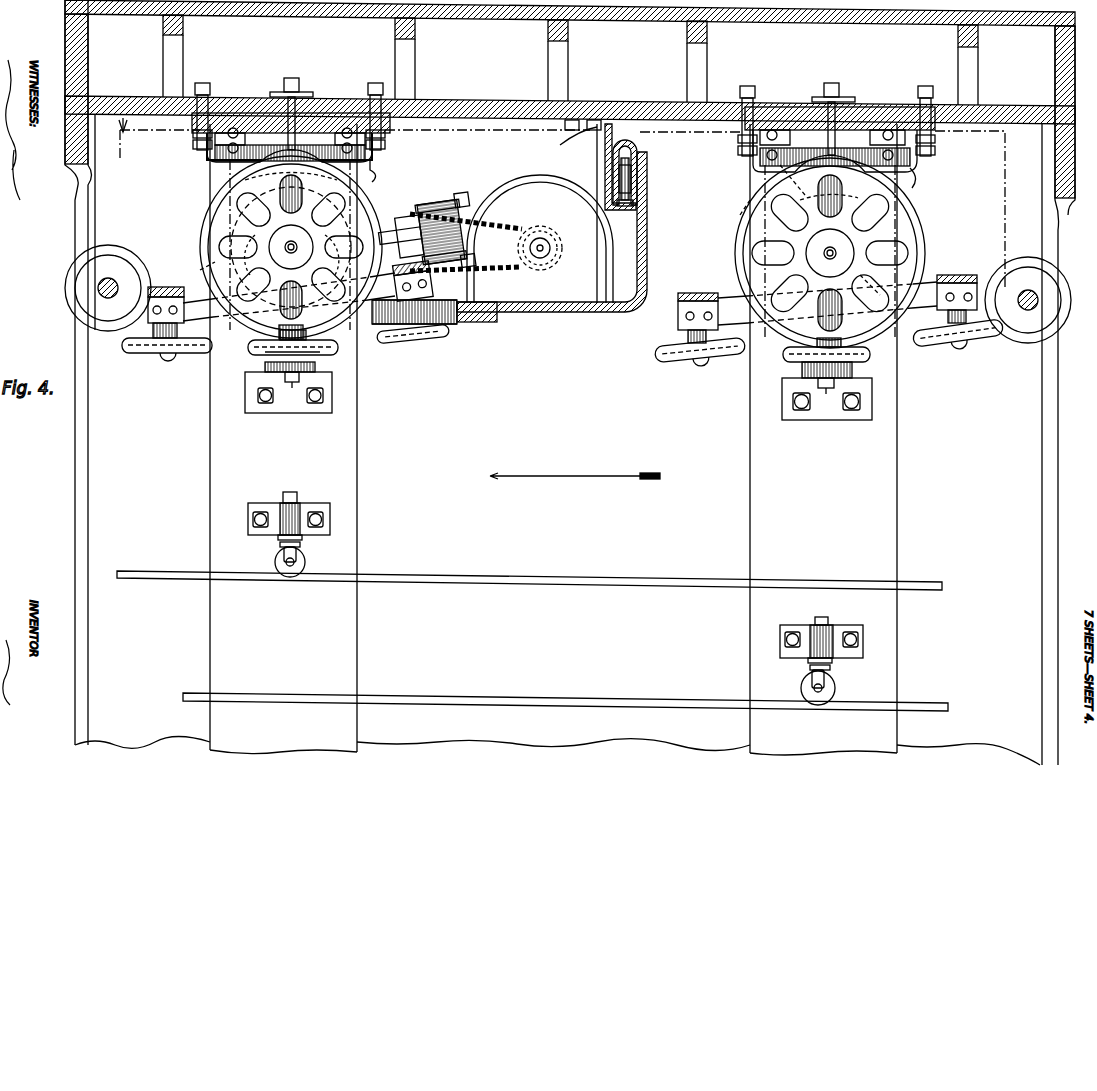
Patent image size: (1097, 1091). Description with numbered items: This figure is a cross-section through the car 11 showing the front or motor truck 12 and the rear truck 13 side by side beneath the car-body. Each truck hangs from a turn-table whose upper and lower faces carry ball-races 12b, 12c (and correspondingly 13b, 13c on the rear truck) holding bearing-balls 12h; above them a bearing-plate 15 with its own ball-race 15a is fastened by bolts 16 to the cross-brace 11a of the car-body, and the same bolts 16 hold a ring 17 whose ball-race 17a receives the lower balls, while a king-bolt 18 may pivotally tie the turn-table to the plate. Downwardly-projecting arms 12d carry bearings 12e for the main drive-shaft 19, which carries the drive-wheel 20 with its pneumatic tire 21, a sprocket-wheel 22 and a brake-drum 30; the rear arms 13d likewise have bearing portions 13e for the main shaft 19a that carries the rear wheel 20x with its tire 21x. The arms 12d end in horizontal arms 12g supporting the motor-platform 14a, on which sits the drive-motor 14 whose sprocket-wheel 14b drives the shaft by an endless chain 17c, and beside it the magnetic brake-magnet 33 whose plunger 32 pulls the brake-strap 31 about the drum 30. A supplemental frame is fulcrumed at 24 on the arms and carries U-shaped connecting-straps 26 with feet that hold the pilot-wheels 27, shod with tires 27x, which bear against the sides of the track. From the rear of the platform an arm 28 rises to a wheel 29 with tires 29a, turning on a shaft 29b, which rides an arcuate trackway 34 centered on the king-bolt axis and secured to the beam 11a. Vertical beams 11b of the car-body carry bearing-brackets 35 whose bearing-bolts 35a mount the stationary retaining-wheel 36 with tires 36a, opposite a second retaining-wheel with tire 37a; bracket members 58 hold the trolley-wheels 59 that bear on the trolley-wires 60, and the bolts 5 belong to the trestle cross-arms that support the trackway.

The bolts 5 is at (66, 254).
The car 11 is at (570, 382).
The cross-brace 11a is at (492, 107).
The vertical supporting-beams 11b is at (750, 430).
The front or motor truck 12 is at (281, 247).
The ball-race 12b is at (226, 150).
The ball-race 12c is at (238, 128).
The downwardly-projecting arms 12d is at (400, 190).
The bearings 12e is at (293, 256).
The horizontal arms 12g is at (416, 339).
The bearing-balls 12h is at (232, 162).
The rear truck 13 is at (816, 253).
The ball-race 13b is at (874, 145).
The ball-race 13c is at (786, 145).
The downwardly-projecting arms 13d is at (838, 193).
The bearing portions 13e is at (831, 263).
The drive-motor 14 is at (540, 239).
The motor-platform 14a is at (550, 313).
The sprocket-wheel 14b is at (528, 248).
The bearing-plate 15 is at (322, 113).
The ball-race 15a is at (205, 105).
The bolts 16 is at (198, 130).
The ring 17 is at (755, 167).
The ball-race 17a is at (362, 172).
The drive chain 17c is at (467, 255).
The king-bolt 18 is at (299, 95).
The main drive-shaft 19 is at (291, 247).
The main shaft 19a is at (830, 253).
The drive-wheel 20 is at (215, 240).
The rear supporting or drive wheel 20x is at (841, 230).
The pneumatic tire 21 is at (212, 262).
The pneumatic tire 21x is at (745, 212).
The sprocket-wheel 22 is at (420, 236).
The fulcrums 24 is at (300, 305).
The U-shaped connecting-straps 26 is at (163, 297).
The pilot-wheels 27 is at (163, 355).
The pneumatic or cushion tires 27x is at (662, 348).
The arm 28 is at (648, 238).
The wheel 29 is at (640, 192).
The pneumatic or cushion tires 29a is at (633, 158).
The shaft 29b is at (634, 176).
The brake-drum 30 is at (338, 255).
The brake-strap 31 is at (235, 250).
The plunger 32 is at (418, 216).
The magnetic brake-magnet 33 is at (446, 208).
The trackway 34 is at (626, 214).
The bearing-brackets 35 is at (262, 383).
The bearing-bolts 35a is at (559, 399).
The retaining-wheel 36 is at (330, 346).
The pneumatic or cushion tires 36a is at (338, 349).
The tire 37a is at (596, 148).
The bracket members 58 is at (270, 510).
The trolley-wheels 59 is at (305, 560).
The trolley-wires 60 is at (532, 636).